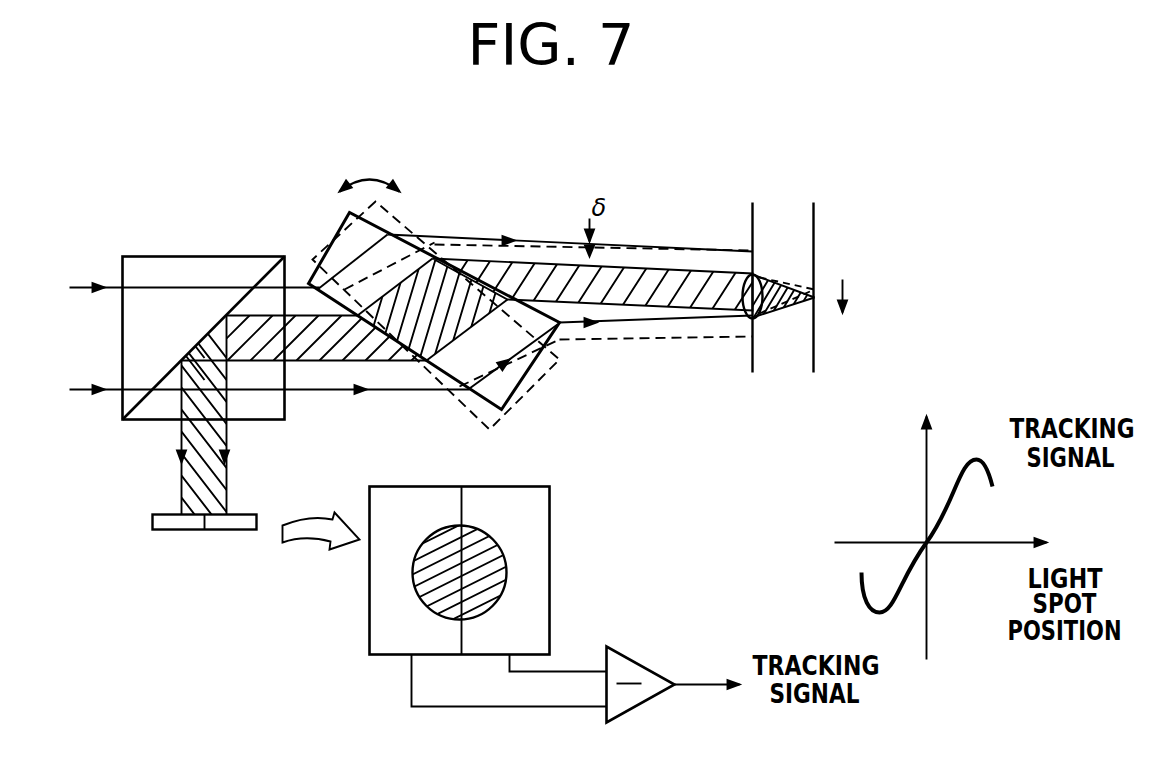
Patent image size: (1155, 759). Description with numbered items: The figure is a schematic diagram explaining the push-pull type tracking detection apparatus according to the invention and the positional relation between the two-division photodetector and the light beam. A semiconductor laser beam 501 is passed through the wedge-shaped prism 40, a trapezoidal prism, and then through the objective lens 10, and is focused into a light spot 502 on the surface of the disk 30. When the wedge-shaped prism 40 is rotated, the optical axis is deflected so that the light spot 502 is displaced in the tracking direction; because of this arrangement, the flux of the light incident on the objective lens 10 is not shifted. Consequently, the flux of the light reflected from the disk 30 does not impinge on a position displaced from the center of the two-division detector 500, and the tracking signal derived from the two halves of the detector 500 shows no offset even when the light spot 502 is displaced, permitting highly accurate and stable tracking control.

The objective lens 10 is at (750, 304).
The disk 30 is at (815, 223).
The wedge-shaped prism 40 is at (512, 388).
The two-division photodetector 500 is at (153, 522).
The semiconductor laser beam 501 is at (91, 366).
The light spot 502 is at (815, 302).